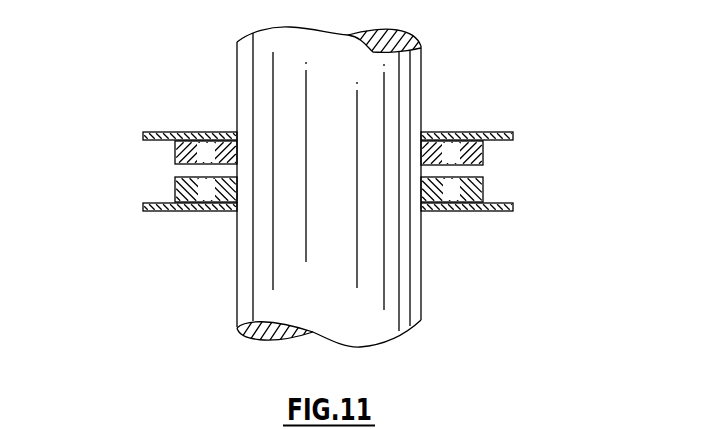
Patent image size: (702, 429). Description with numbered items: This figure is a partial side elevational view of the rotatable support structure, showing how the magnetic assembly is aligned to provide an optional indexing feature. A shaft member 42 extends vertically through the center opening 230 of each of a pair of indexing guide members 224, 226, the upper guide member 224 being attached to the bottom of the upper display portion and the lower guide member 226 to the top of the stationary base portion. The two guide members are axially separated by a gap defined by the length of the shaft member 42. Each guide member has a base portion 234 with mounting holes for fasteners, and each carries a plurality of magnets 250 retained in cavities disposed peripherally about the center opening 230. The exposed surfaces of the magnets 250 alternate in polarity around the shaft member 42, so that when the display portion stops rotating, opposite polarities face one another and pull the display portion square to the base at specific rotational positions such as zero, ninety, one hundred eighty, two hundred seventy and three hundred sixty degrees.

The shaft member 42 is at (407, 82).
The indexing guide member 224 is at (287, 107).
The indexing guide member 226 is at (121, 196).
The center opening 230 is at (428, 132).
The base portion 234 is at (168, 131).
The magnets 250 is at (175, 180).